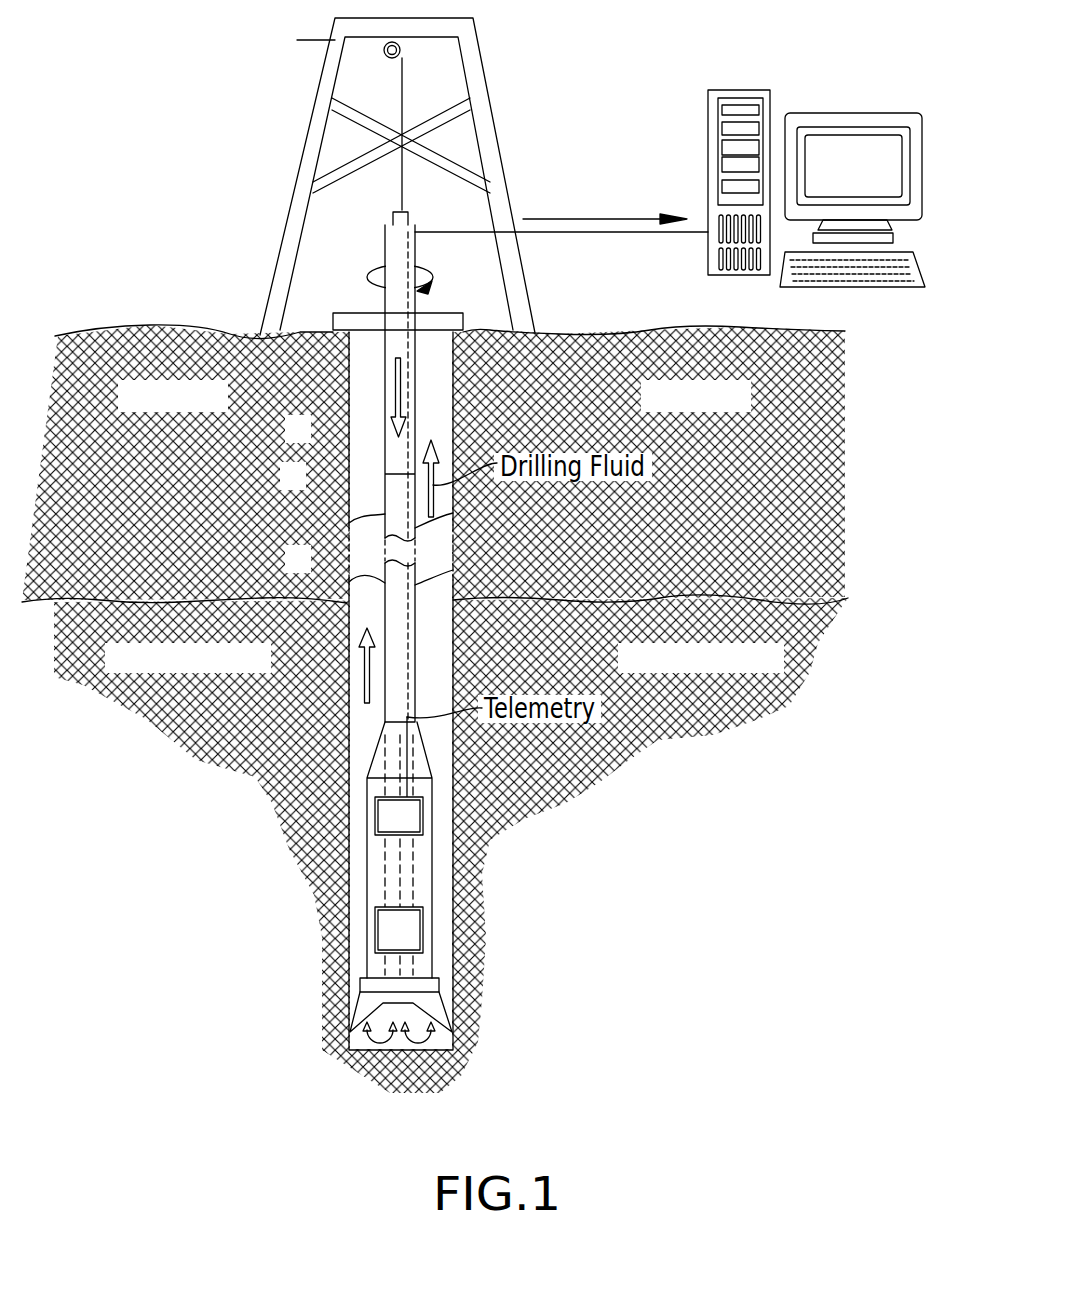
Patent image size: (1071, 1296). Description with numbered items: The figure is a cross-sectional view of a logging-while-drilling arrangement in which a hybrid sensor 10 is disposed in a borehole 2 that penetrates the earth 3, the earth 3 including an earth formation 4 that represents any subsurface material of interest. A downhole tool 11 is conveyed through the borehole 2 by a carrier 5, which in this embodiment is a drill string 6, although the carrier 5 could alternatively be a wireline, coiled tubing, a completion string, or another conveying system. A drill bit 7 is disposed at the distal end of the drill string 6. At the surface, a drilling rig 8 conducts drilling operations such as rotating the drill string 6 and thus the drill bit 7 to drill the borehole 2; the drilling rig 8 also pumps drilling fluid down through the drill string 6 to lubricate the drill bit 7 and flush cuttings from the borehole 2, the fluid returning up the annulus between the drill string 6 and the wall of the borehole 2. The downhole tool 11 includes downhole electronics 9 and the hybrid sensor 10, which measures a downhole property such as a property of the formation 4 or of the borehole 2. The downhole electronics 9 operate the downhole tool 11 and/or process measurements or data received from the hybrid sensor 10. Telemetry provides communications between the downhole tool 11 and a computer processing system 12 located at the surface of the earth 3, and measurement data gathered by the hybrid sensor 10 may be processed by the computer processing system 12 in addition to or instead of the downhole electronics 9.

The borehole 2 is at (355, 492).
The earth 3 is at (219, 411).
The earth formation 4 is at (264, 672).
The carrier 5 is at (385, 583).
The drill string 6 is at (385, 448).
The drill bit 7 is at (368, 1003).
The drilling rig 8 is at (238, 268).
The downhole electronics 9 is at (393, 830).
The hybrid sensor 10 is at (389, 944).
The downhole tool 11 is at (432, 865).
The computer processing system 12 is at (750, 90).